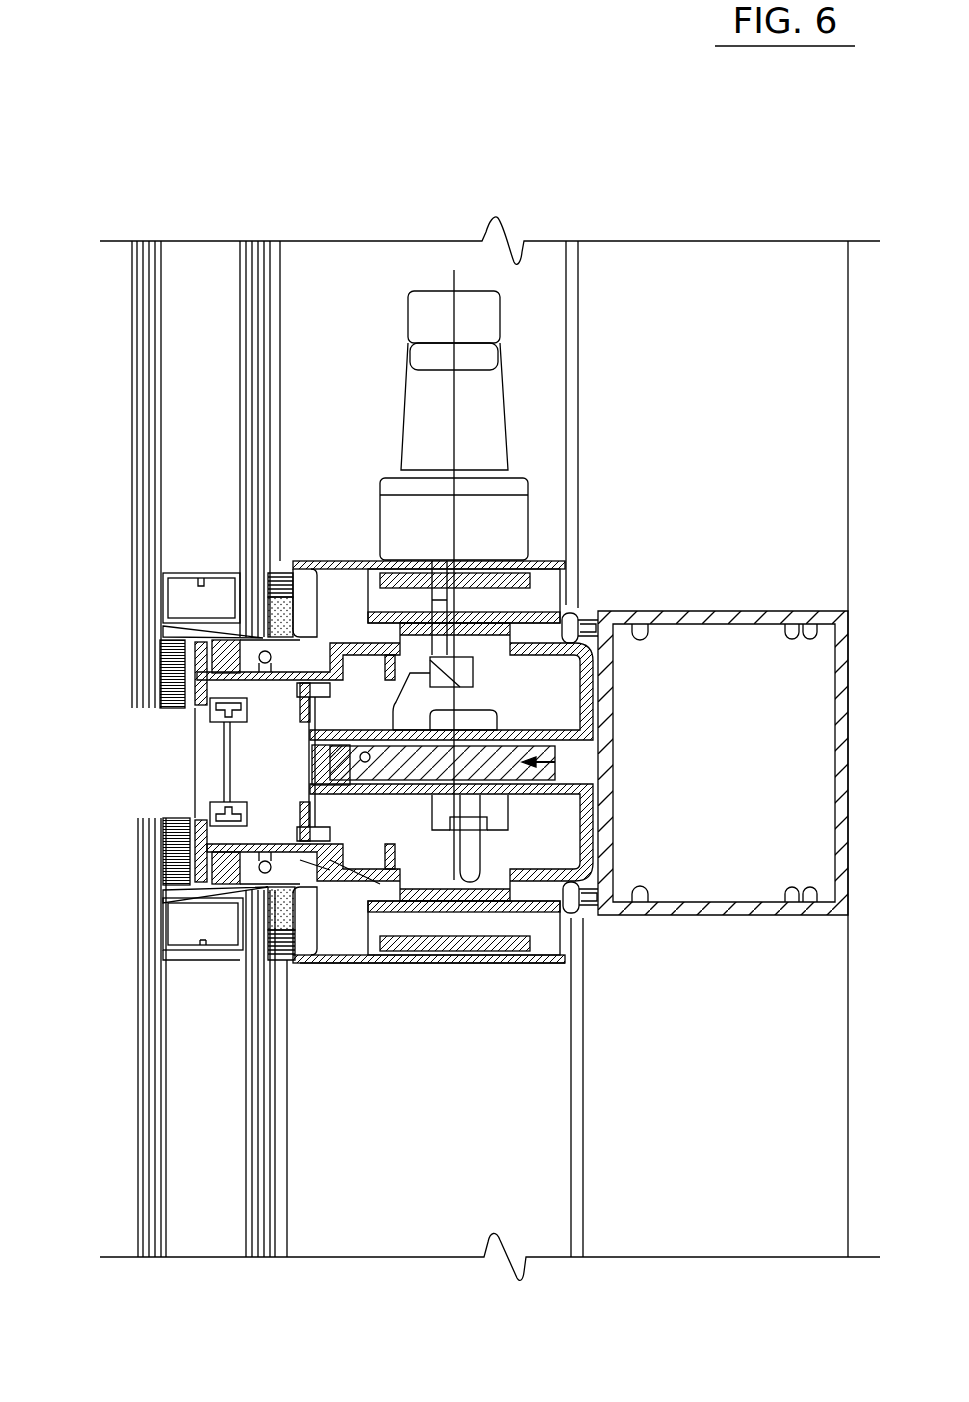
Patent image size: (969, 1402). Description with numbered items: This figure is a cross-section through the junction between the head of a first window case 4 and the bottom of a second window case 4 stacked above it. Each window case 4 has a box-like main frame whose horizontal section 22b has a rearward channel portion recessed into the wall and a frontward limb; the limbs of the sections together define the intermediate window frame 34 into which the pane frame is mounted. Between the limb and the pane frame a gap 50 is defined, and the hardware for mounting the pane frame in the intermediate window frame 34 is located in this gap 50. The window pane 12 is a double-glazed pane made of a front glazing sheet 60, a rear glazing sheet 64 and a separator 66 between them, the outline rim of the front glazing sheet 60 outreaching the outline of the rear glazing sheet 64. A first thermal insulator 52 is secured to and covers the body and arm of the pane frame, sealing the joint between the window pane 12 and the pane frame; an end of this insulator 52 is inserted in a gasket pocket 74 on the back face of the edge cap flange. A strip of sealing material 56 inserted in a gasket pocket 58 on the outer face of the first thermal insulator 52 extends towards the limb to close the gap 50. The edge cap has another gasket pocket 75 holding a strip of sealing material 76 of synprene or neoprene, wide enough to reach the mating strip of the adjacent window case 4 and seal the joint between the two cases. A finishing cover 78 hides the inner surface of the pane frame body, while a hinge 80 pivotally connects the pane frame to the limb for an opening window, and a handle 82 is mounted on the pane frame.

The window case 4 is at (116, 412).
The window pane 12 is at (205, 395).
The horizontal section 22b is at (847, 737).
The intermediate window frame 34 is at (607, 757).
The gap 50 is at (364, 827).
The first thermal insulator 52 is at (572, 615).
The strip of sealing material 56 is at (303, 812).
The gasket pocket 58 is at (352, 882).
The front glazing sheet 60 is at (152, 241).
The rear glazing sheet 64 is at (264, 241).
The separator 66 is at (190, 965).
The gasket pocket 74 is at (160, 647).
The gasket pocket 75 is at (190, 701).
The strip of sealing material 76 is at (227, 797).
The finishing cover 78 is at (437, 965).
The hinge 80 is at (560, 857).
The handle 82 is at (497, 413).